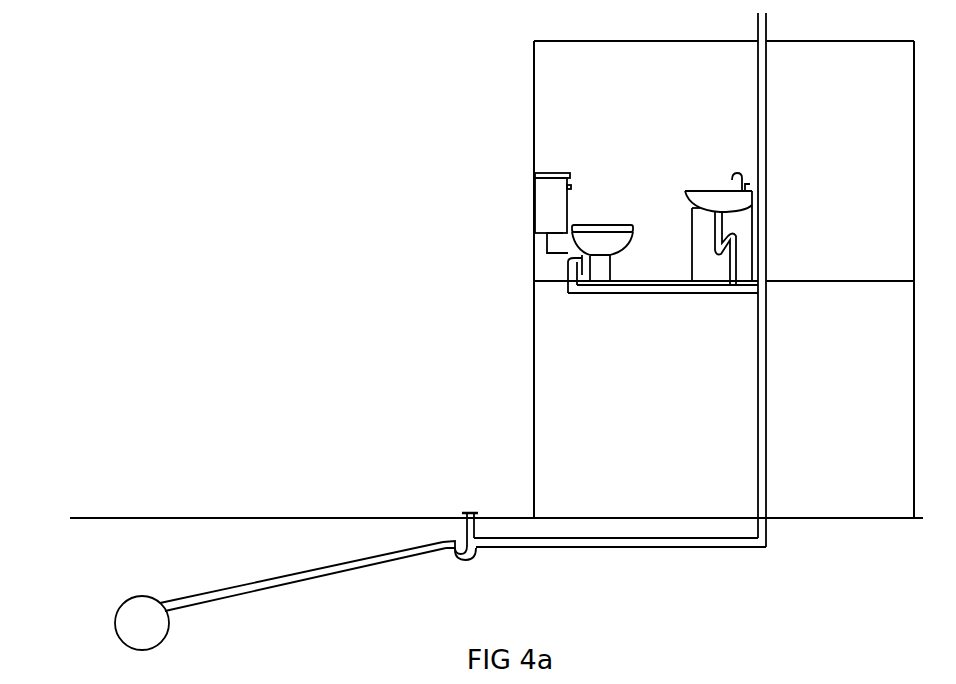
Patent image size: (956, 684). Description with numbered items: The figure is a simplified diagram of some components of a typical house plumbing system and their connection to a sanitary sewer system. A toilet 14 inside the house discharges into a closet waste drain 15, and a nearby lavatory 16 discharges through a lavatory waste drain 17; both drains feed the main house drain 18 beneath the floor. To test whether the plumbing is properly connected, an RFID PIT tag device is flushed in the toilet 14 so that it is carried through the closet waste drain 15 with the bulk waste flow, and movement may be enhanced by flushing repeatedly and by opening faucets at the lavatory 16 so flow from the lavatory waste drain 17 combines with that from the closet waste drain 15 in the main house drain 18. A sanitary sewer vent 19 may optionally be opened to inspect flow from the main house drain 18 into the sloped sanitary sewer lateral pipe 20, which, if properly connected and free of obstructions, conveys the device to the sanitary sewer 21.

The toilet 14 is at (588, 227).
The closet waste drain 15 is at (603, 295).
The lavatory 16 is at (715, 188).
The lavatory waste drain 17 is at (727, 268).
The main house drain 18 is at (639, 547).
The sanitary sewer vent 19 is at (462, 561).
The sanitary sewer lateral pipe 20 is at (295, 583).
The sanitary sewer 21 is at (115, 615).